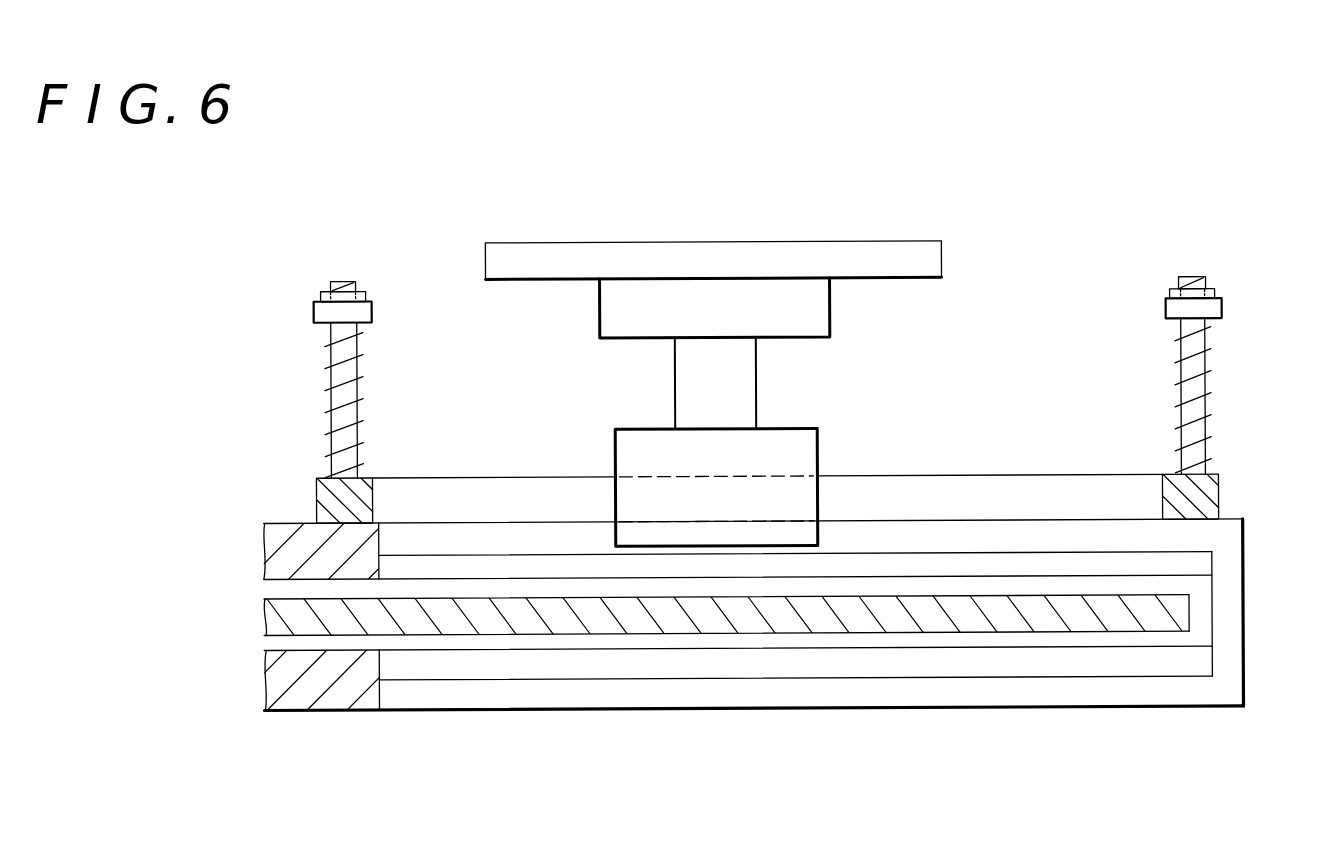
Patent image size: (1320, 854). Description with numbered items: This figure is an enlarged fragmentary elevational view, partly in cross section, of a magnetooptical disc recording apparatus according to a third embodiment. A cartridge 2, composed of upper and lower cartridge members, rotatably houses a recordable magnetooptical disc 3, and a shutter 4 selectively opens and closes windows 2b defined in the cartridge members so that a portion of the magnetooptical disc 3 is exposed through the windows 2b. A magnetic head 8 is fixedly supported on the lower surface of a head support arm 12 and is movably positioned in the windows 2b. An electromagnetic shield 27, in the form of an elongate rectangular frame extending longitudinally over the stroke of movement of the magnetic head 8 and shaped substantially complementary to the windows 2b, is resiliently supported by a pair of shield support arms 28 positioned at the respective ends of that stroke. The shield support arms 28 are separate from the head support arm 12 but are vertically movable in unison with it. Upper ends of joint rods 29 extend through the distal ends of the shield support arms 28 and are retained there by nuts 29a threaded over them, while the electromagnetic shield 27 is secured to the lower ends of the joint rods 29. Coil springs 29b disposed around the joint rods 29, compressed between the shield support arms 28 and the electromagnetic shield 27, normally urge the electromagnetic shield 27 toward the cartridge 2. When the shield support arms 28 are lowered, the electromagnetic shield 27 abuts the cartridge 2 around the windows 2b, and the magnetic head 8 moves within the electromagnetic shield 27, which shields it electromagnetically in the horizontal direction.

The cartridge 2 is at (351, 698).
The windows 2b is at (529, 566).
The magnetooptical disc 3 is at (717, 622).
The shutter 4 is at (1230, 627).
The magnetic head 8 is at (800, 436).
The head support arm 12 is at (707, 255).
The electromagnetic shield 27 is at (1185, 503).
The shield support arms 28 is at (363, 315).
The joint rods 29 is at (340, 407).
The nuts 29a is at (367, 298).
The coil springs 29b is at (328, 378).